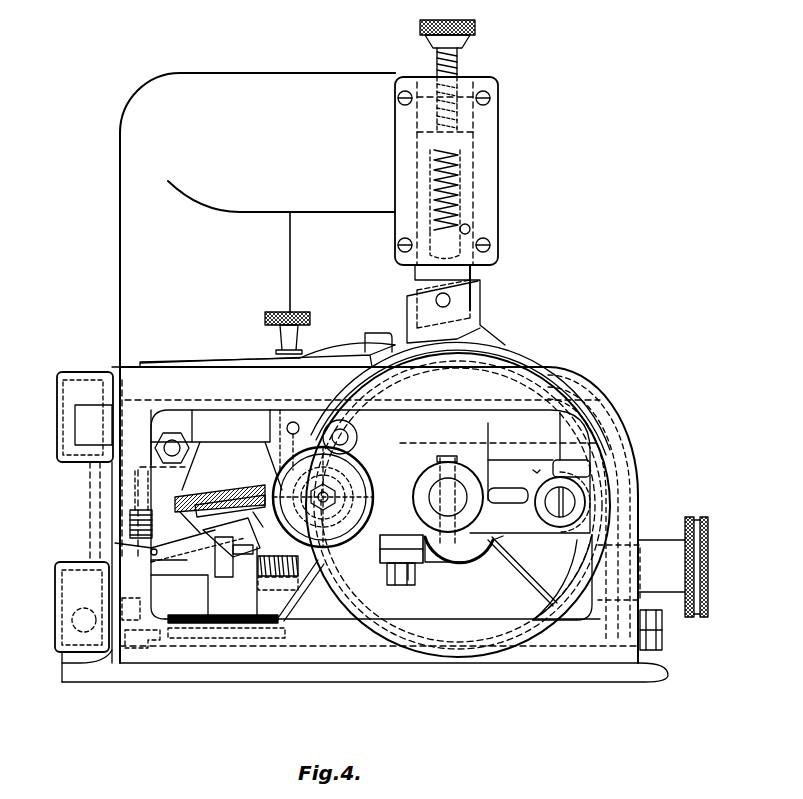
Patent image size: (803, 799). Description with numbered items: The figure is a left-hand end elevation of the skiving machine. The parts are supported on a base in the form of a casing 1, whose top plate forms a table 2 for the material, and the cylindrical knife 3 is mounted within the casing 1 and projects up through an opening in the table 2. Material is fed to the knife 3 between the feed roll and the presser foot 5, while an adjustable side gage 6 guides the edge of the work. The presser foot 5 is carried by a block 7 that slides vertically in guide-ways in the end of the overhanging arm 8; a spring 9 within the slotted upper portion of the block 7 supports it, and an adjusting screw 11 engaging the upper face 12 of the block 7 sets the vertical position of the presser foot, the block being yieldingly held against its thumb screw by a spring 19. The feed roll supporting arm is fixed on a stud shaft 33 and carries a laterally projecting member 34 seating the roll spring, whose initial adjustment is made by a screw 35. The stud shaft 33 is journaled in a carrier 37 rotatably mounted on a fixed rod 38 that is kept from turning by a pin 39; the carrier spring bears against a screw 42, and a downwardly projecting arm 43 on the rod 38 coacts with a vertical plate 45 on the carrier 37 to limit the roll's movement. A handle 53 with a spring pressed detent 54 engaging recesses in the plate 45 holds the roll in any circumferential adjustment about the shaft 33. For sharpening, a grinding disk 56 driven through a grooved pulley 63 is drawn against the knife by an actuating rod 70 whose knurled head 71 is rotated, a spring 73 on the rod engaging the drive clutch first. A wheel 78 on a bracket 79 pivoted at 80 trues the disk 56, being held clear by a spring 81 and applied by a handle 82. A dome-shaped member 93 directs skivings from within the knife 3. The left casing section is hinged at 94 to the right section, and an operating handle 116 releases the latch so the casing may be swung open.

The casing 1 is at (633, 430).
The table 2 is at (545, 372).
The cylindrical knife 3 is at (500, 368).
The presser foot 5 is at (482, 345).
The adjustable side gage 6 is at (330, 355).
The block 7 is at (466, 274).
The overhanging arm 8 is at (356, 92).
The spring 9 is at (455, 183).
The adjusting screw 11 is at (455, 68).
The upper face 12 is at (465, 145).
The spring 19 is at (470, 229).
The stud shaft 33 is at (468, 535).
The laterally projecting member 34 is at (395, 565).
The screw 35 is at (410, 585).
The carrier 37 is at (540, 470).
The fixed rod 38 is at (216, 432).
The pin 39 is at (168, 433).
The screw 42 is at (558, 512).
The downwardly projecting arm 43 is at (287, 426).
The vertical plate 45 is at (350, 434).
The handle 53 is at (340, 528).
The spring pressed detent 54 is at (335, 497).
The grinding disk 56 is at (198, 498).
The grooved pulley 63 is at (245, 636).
The actuating rod 70 is at (278, 578).
The knurled head 71 is at (706, 530).
The spring 73 is at (262, 600).
The wheel 78 is at (245, 500).
The bracket 79 is at (235, 548).
The pivot 80 is at (115, 543).
The spring 81 is at (132, 514).
The handle 82 is at (188, 575).
The dome-shaped member 93 is at (498, 560).
The hinge 94 is at (82, 385).
The operating handle 116 is at (652, 636).